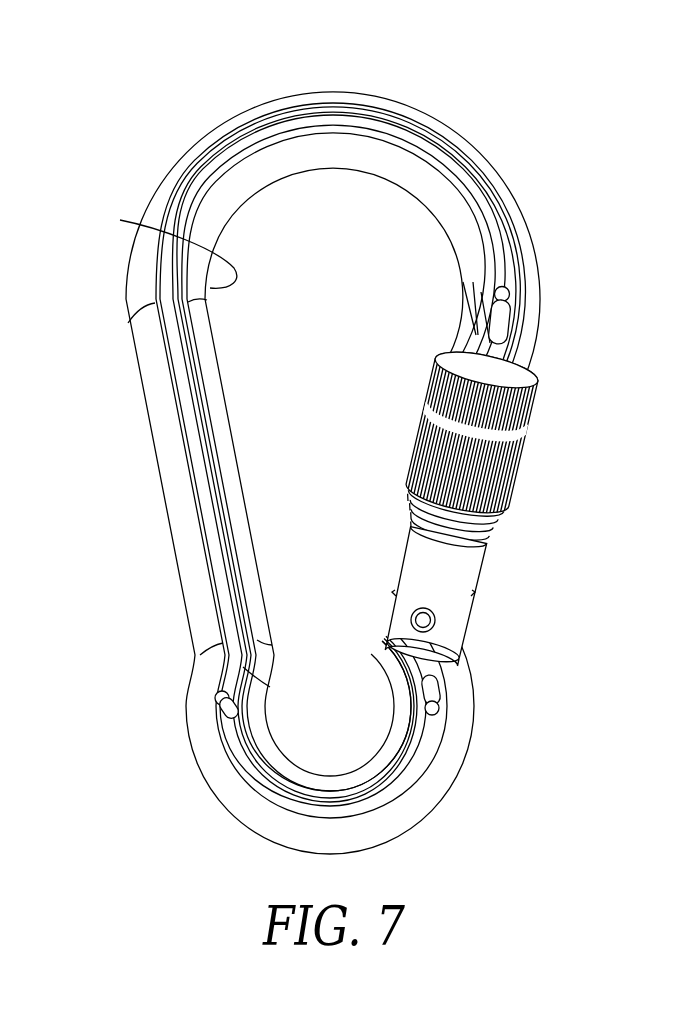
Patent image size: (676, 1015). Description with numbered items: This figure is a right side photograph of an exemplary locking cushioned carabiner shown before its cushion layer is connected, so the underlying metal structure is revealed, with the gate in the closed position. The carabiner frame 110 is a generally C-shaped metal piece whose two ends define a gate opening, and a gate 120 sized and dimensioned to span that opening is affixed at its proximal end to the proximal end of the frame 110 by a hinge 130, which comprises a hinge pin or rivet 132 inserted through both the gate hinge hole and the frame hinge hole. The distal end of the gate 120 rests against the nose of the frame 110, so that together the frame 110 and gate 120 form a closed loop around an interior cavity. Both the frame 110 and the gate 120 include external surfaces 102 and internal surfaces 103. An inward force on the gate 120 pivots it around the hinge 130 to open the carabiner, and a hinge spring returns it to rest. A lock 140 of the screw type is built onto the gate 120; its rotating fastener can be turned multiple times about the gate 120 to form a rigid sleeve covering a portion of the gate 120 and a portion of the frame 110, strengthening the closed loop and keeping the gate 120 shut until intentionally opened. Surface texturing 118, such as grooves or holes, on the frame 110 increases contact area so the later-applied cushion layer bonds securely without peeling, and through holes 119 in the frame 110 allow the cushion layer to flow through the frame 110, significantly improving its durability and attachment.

The external surfaces 102 is at (160, 500).
The internal surfaces 103 is at (120, 220).
The carabiner frame 110 is at (435, 185).
The surface texturing 118 is at (362, 122).
The through holes 119 is at (507, 291).
The gate 120 is at (457, 556).
The hinge 130 is at (423, 620).
The hinge pin or rivet 132 is at (432, 622).
The lock 140 is at (509, 433).